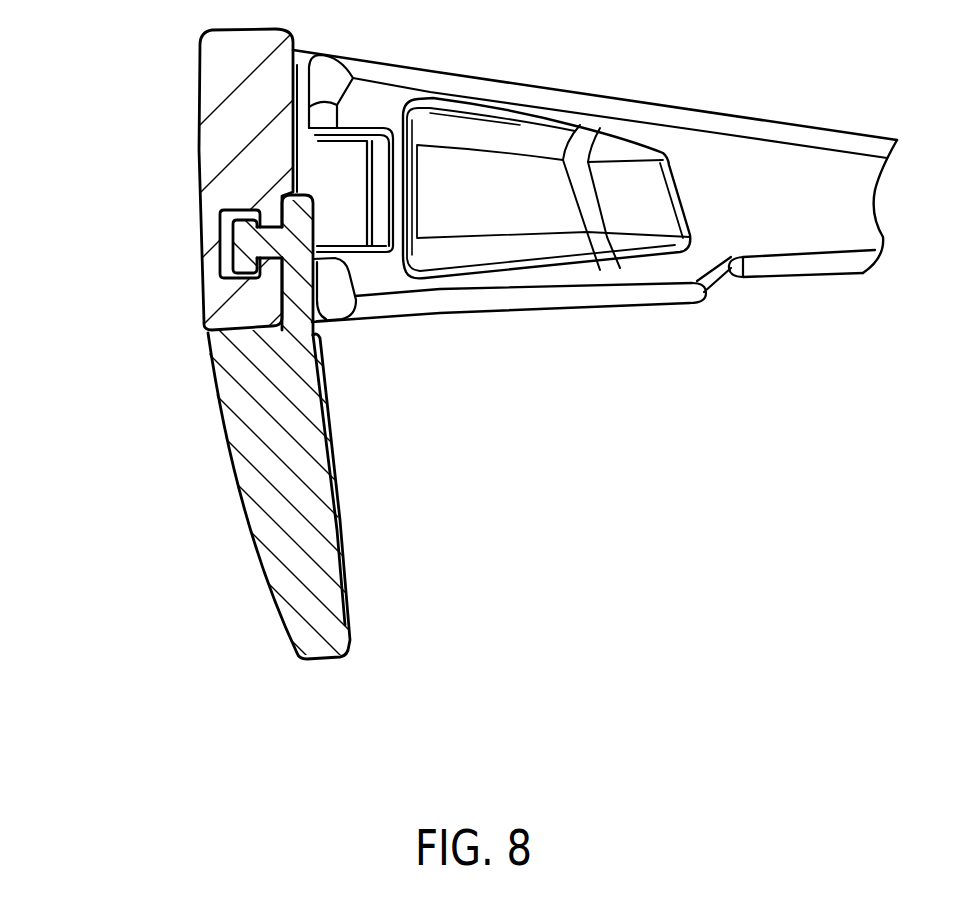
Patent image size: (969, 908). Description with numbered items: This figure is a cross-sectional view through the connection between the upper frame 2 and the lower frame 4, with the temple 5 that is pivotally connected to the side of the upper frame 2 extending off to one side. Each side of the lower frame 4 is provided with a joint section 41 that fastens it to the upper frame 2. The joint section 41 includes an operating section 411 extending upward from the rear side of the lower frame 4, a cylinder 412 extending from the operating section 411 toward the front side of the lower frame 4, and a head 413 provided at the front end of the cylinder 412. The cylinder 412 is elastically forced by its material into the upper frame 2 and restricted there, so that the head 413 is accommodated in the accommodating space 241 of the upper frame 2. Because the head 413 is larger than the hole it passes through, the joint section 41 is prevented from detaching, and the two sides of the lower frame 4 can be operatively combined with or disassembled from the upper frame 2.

The upper frame 2 is at (216, 96).
The accommodating space 241 is at (225, 255).
The lower frame 4 is at (323, 652).
The joint section 41 is at (170, 225).
The operating section 411 is at (280, 194).
The cylinder 412 is at (258, 208).
The head 413 is at (228, 234).
The temple 5 is at (767, 123).